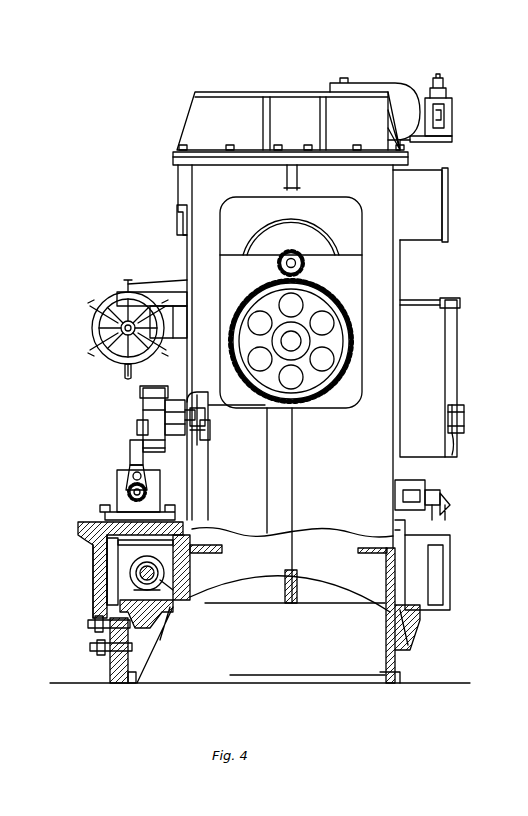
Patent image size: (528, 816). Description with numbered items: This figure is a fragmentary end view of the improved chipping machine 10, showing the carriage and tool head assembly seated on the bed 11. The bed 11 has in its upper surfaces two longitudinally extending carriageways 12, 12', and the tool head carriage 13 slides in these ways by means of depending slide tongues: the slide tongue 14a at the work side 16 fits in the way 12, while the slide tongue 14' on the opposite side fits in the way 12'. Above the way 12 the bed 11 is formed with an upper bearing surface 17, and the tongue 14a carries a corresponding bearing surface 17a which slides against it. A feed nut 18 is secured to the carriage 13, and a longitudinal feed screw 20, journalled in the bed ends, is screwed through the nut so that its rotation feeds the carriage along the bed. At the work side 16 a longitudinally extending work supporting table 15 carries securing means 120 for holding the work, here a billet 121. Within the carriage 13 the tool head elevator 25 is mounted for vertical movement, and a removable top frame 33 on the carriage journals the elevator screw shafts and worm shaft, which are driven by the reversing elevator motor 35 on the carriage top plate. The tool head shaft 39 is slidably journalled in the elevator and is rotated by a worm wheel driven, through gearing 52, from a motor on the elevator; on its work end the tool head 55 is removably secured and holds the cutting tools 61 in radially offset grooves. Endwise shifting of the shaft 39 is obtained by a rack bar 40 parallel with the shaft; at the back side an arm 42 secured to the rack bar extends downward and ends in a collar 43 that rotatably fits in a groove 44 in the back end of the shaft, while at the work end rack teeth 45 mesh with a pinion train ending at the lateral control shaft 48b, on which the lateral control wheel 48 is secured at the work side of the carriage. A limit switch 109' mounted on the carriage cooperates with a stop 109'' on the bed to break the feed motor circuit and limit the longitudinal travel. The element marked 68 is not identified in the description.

The chipping machine 10 is at (178, 132).
The top frame 33 is at (298, 114).
The reversing elevator motor 35 is at (400, 90).
The tool head carriage 13 is at (187, 255).
The gearing 52 is at (278, 275).
The tool head elevator 25 is at (291, 332).
The rack teeth 45 is at (90, 318).
The lateral control wheel 48 is at (92, 325).
The lateral control shaft 48b is at (126, 339).
The tool head shaft 39 is at (190, 395).
The clamp 68 is at (205, 419).
The tool head 55 is at (150, 412).
The cutting tool 61 is at (140, 427).
The billet 121 is at (118, 478).
The work securing means 120 is at (125, 494).
The work supporting table 15 is at (80, 522).
The work side 16 is at (86, 580).
The bearing surface 17 is at (106, 556).
The bearing surface 17a is at (190, 530).
The feed nut 18 is at (190, 576).
The feed screw 20 is at (136, 578).
The slide tongue 14a is at (146, 611).
The carriageway 12 is at (170, 645).
The bed 11 is at (98, 667).
The rack bar 40 is at (426, 303).
The arm 42 is at (458, 356).
The groove 44 is at (466, 420).
The collar 43 is at (460, 451).
The limit switch 109' is at (416, 489).
The stop 109'' is at (456, 503).
The slide tongue 14' is at (392, 601).
The carriageway 12' is at (382, 644).